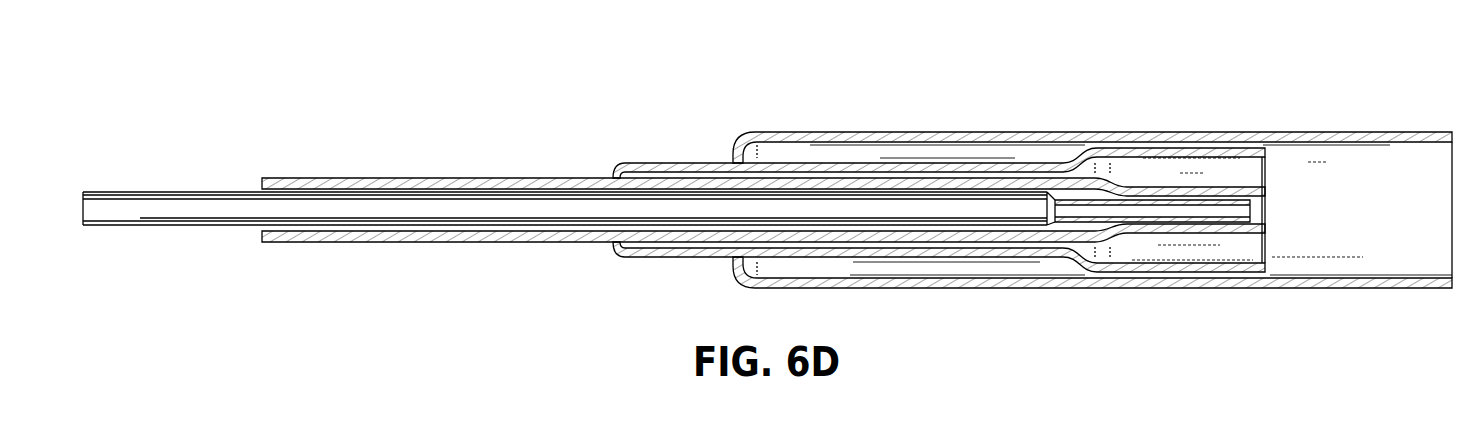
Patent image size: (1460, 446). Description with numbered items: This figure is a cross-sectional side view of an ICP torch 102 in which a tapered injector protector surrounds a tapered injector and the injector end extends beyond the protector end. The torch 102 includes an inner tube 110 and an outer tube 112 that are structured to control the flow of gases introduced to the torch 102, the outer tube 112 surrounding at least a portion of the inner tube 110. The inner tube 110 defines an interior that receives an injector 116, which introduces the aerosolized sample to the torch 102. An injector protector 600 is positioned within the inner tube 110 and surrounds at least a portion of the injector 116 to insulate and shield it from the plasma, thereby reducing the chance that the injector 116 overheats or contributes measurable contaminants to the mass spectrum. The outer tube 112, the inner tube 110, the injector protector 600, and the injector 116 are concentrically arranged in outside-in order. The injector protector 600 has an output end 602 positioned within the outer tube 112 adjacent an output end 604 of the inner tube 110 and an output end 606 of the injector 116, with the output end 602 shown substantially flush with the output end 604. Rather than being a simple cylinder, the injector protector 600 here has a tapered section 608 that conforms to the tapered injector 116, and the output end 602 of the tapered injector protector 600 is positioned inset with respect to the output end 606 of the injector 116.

The torch 102 is at (797, 78).
The inner tube 110 is at (658, 163).
The outer tube 112 is at (953, 132).
The injector 116 is at (152, 192).
The injector protector 600 is at (426, 178).
The output end of the injector protector 602 is at (1273, 197).
The output end of the inner tube 604 is at (1277, 165).
The output end of the injector 606 is at (1275, 213).
The tapered section 608 is at (1138, 180).